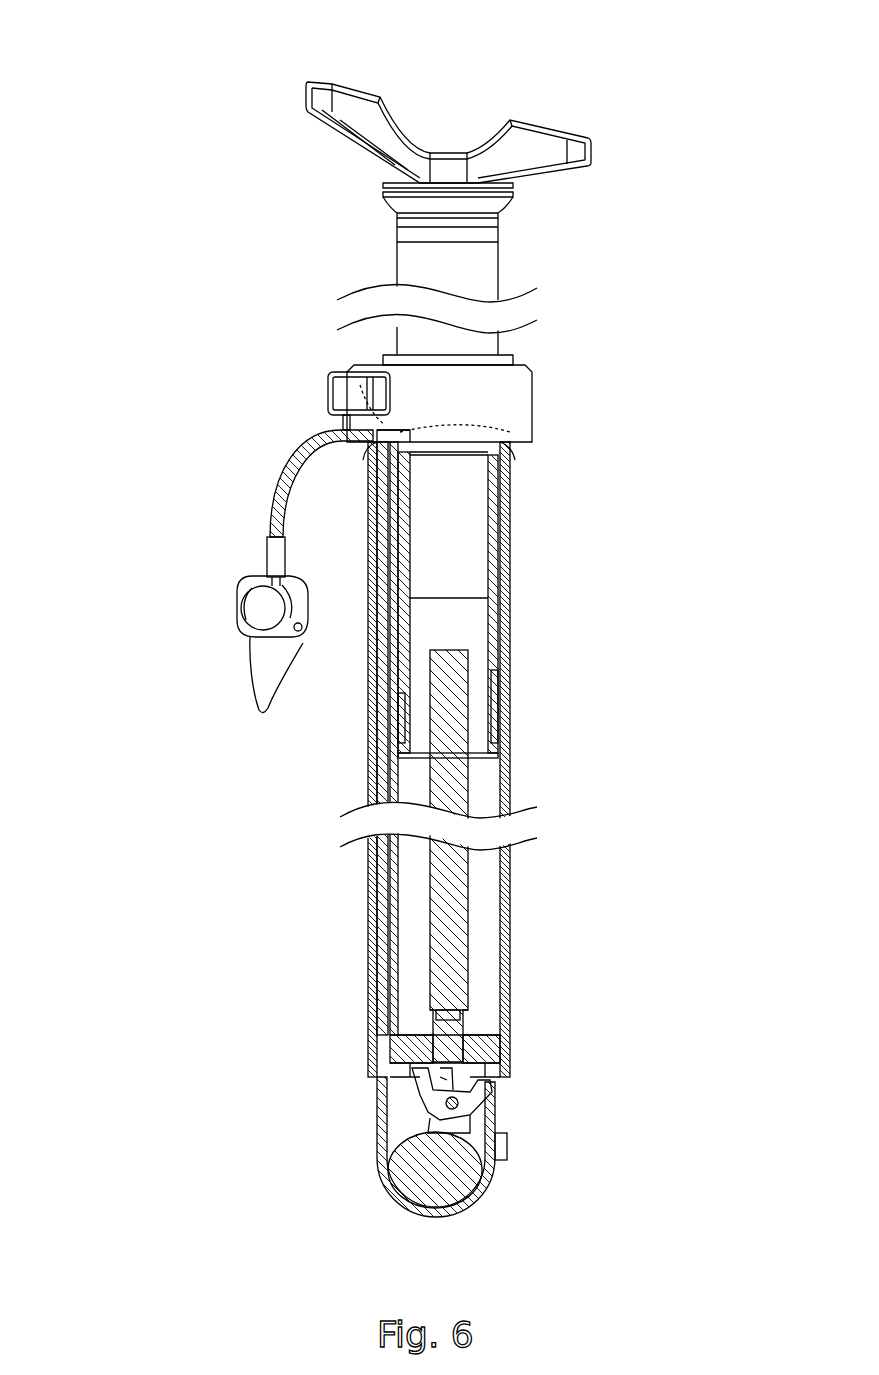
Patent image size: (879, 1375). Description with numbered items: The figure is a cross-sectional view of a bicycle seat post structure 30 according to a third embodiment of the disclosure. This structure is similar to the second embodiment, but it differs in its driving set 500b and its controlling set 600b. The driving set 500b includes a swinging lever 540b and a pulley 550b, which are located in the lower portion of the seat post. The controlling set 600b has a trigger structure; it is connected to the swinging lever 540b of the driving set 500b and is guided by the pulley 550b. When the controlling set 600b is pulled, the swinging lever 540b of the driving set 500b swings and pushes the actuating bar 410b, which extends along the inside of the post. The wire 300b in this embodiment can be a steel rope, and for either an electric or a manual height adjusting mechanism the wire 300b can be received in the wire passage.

The bicycle seat post structure 30 is at (63, 35).
The wire 300b is at (367, 745).
The actuating bar 410b is at (445, 940).
The driving set 500b is at (705, 1045).
The swinging lever 540b is at (505, 1082).
The pulley 550b is at (463, 1183).
The controlling set 600b is at (260, 672).